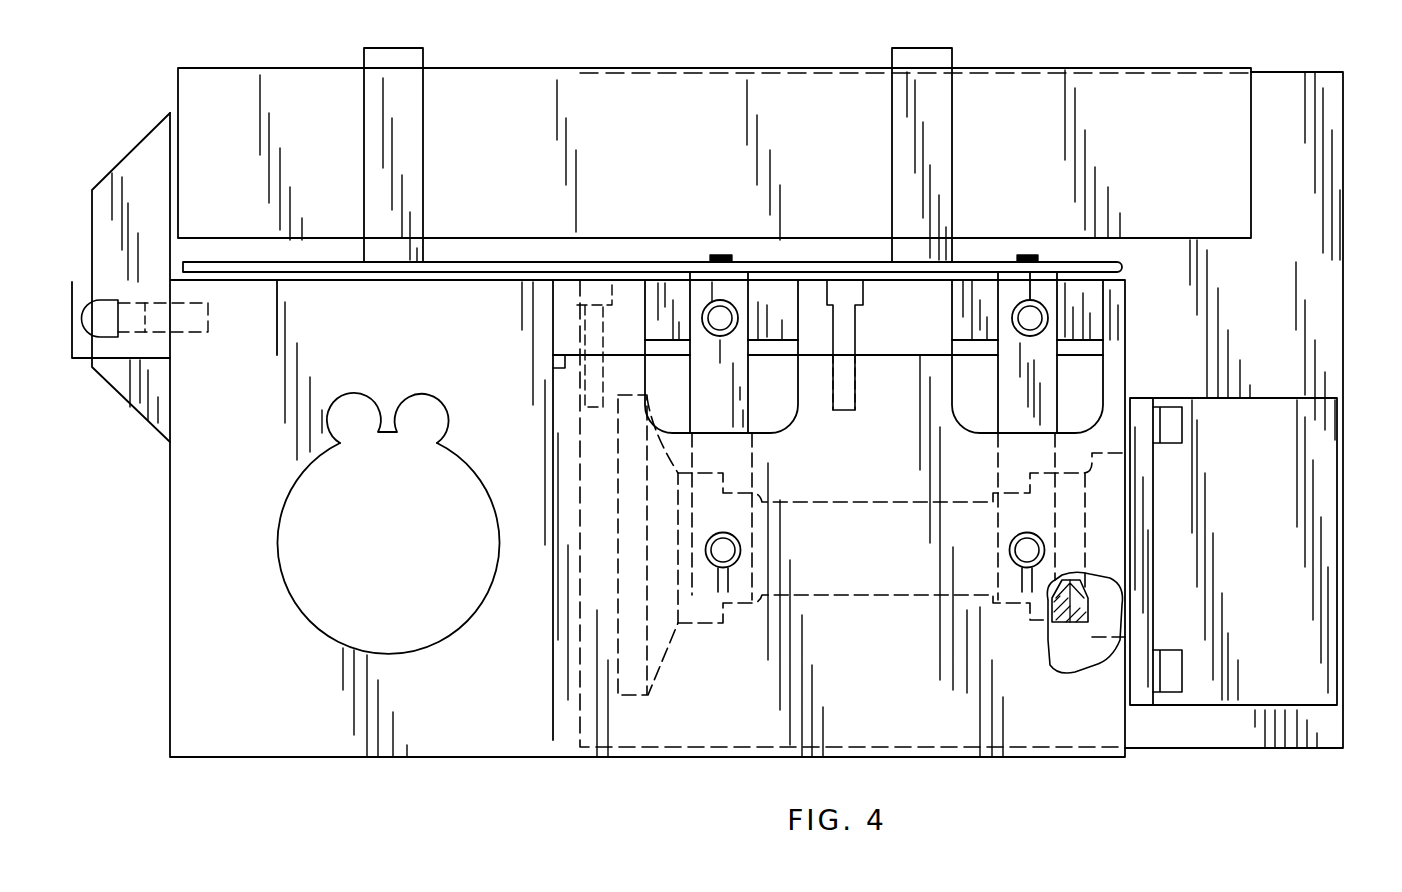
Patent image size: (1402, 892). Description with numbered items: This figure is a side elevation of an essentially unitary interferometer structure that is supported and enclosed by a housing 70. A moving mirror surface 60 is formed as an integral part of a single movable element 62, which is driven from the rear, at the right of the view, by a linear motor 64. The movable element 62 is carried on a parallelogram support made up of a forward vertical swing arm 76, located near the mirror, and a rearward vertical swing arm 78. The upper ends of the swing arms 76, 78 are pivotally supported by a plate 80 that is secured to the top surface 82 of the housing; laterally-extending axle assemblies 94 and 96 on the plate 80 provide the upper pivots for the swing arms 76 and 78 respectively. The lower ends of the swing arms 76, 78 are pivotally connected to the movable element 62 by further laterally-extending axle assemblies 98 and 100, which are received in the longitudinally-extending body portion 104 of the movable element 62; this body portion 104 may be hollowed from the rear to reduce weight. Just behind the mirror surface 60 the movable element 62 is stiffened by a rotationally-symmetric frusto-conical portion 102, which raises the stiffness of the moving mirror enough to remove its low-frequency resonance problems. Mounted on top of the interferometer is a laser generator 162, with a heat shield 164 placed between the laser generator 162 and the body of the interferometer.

The moving mirror surface 60 is at (617, 640).
The movable element 62 is at (856, 598).
The linear motor 64 is at (1274, 537).
The housing 70 is at (828, 731).
The forward vertical swing arm 76 is at (727, 402).
The rearward vertical swing arm 78 is at (1022, 400).
The plate 80 is at (676, 292).
The top surface 82 is at (870, 355).
The axle assembly 94 is at (733, 311).
The axle assembly 96 is at (1030, 300).
The axle assembly 98 is at (740, 554).
The axle assembly 100 is at (1012, 553).
The frusto-conical portion 102 is at (660, 650).
The body portion 104 is at (896, 577).
The laser generator 162 is at (762, 91).
The heat shield 164 is at (1125, 266).